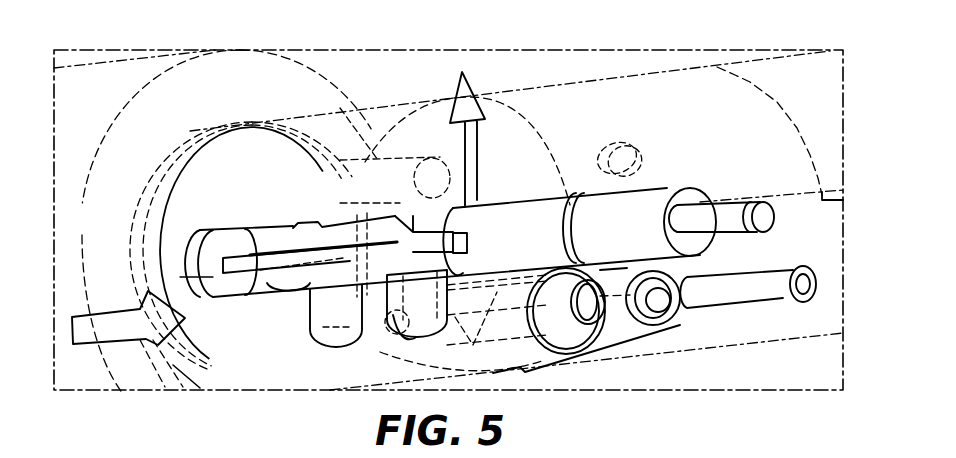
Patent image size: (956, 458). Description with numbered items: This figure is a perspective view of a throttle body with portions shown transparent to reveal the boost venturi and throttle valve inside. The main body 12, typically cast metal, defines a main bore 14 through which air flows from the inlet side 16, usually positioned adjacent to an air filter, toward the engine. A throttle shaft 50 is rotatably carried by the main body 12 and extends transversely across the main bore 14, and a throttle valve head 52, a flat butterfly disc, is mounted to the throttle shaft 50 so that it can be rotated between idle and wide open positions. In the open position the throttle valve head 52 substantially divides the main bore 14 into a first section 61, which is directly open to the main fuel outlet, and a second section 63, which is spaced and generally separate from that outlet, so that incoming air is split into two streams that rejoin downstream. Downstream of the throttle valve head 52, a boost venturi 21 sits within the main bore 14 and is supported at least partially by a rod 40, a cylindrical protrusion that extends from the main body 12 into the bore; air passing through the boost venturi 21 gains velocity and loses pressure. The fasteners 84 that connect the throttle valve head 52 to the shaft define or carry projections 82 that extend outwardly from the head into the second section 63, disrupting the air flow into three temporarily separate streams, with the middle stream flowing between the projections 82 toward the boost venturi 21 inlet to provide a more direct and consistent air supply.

The main body 12 is at (581, 65).
The main bore 14 is at (226, 162).
The inlet side 16 is at (281, 137).
The second section 63 is at (287, 170).
The fasteners 84 is at (333, 210).
The throttle valve head 52 is at (252, 263).
The throttle shaft 50 is at (645, 200).
The boost venturi 21 is at (687, 272).
The rod 40 is at (770, 287).
The projections 82 is at (323, 317).
The first section 61 is at (240, 353).